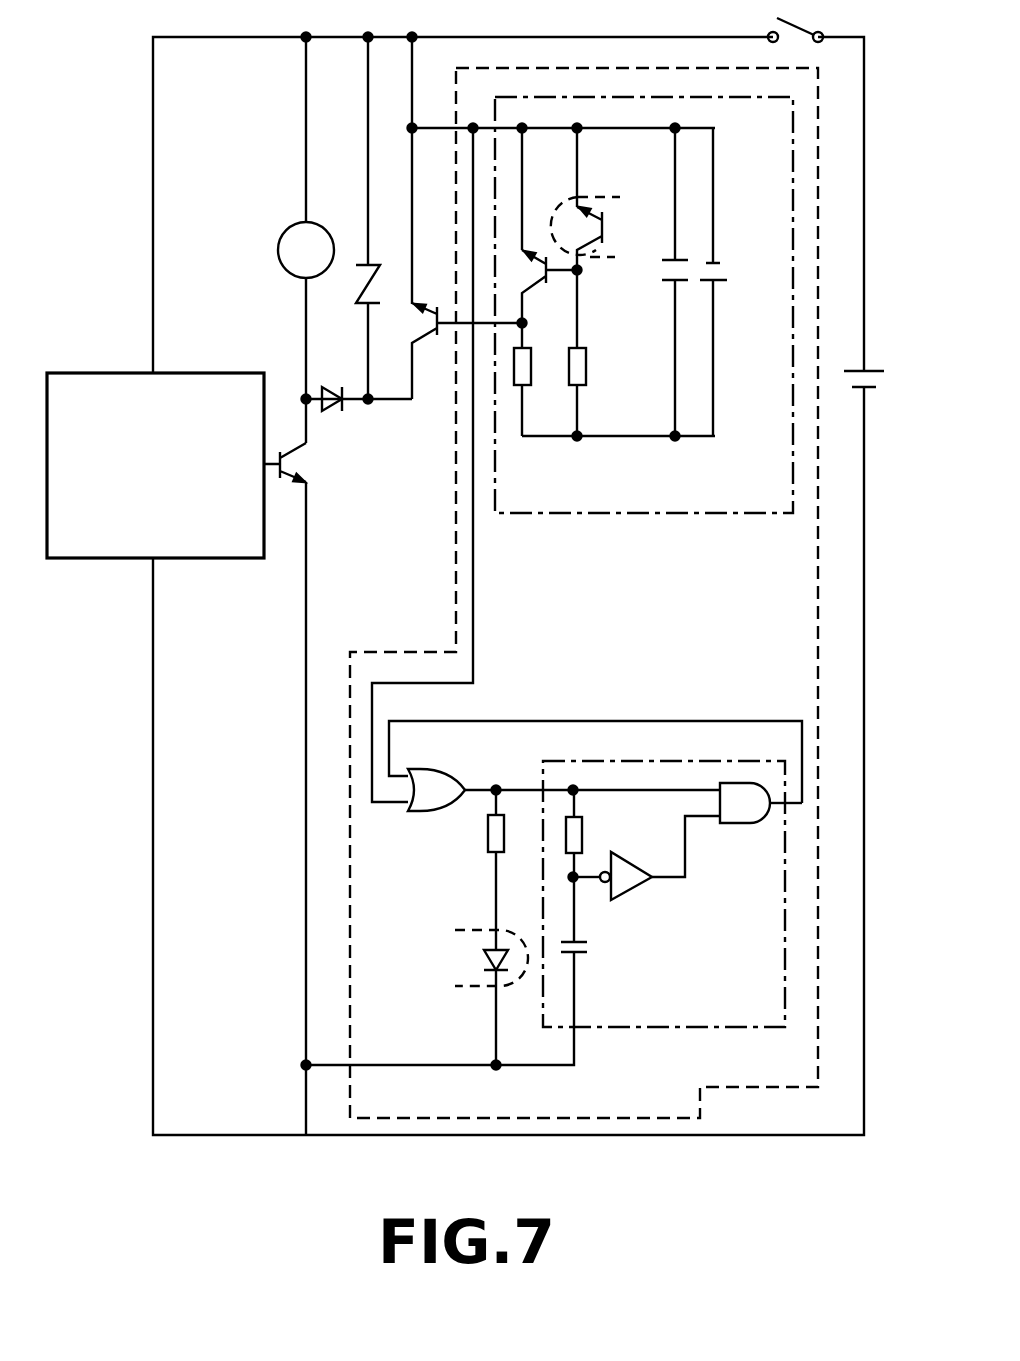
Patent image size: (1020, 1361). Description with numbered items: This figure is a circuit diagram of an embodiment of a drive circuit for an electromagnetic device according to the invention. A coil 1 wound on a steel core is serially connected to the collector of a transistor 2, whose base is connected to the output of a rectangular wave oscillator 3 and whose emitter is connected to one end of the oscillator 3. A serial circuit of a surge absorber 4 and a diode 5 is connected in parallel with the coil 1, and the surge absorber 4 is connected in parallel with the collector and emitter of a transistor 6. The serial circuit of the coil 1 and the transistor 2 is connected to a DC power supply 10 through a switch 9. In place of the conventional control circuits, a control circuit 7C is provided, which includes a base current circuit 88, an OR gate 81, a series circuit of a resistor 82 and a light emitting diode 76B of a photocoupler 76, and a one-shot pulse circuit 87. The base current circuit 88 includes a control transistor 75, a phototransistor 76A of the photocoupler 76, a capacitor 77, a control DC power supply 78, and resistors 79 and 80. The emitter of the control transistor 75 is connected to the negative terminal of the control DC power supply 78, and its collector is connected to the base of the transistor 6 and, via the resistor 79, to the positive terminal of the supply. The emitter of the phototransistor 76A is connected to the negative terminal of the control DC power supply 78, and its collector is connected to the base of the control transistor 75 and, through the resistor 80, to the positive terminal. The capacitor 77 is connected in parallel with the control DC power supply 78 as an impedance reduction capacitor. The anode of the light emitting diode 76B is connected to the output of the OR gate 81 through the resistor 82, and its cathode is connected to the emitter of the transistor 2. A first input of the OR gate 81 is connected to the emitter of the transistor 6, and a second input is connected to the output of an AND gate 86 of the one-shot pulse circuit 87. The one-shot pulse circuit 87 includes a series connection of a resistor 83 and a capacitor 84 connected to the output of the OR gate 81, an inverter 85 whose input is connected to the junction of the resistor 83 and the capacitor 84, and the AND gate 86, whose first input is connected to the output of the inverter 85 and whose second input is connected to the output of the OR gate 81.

The coil 1 is at (285, 232).
The transistor 2 is at (298, 469).
The rectangular wave oscillator 3 is at (180, 372).
The surge absorber 4 is at (360, 286).
The diode 5 is at (334, 412).
The transistor 6 is at (417, 332).
The switch 9 is at (800, 19).
The DC power supply 10 is at (852, 368).
The control transistor 75 is at (549, 238).
The photocoupler 76 is at (562, 204).
The phototransistor 76A is at (608, 238).
The light emitting diode 76B is at (480, 958).
The capacitor 77 is at (670, 286).
The control DC power supply 78 is at (720, 258).
The resistor 79 is at (532, 370).
The resistor 80 is at (587, 370).
The OR gate 81 is at (450, 745).
The resistor 82 is at (488, 832).
The resistor 83 is at (584, 835).
The capacitor 84 is at (583, 946).
The inverter 85 is at (648, 858).
The AND gate 86 is at (740, 824).
The one-shot pulse circuit 87 is at (725, 1030).
The base current circuit 88 is at (636, 514).
The control circuit 7C is at (766, 1088).